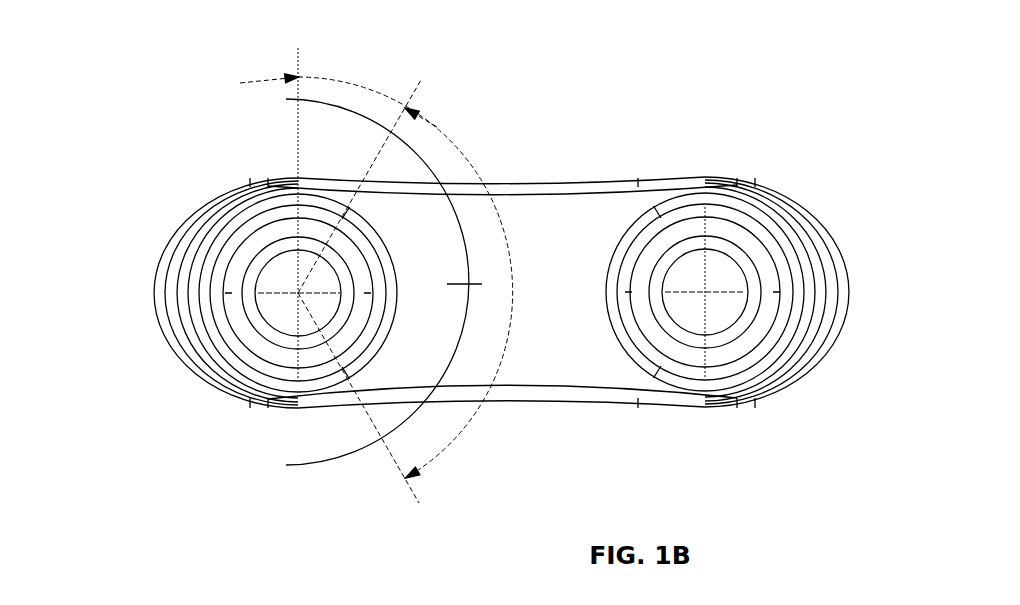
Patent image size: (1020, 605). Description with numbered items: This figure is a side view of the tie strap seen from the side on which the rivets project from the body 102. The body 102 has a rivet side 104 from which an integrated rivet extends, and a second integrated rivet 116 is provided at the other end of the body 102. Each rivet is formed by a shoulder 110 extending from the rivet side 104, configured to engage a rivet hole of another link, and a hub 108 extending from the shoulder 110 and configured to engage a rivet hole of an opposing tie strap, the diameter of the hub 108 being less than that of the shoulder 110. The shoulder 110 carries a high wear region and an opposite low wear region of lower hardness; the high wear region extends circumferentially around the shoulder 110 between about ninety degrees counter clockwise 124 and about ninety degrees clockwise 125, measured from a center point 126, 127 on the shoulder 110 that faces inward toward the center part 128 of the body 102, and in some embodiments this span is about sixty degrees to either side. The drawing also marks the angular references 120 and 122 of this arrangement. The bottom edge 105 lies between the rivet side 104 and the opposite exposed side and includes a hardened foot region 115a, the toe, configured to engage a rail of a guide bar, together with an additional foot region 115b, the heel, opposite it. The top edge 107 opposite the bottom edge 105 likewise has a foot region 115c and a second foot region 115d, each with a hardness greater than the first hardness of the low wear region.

The body 102 is at (587, 180).
The rivet side 104 is at (585, 365).
The bottom edge 105 is at (615, 181).
The top edge 107 is at (513, 398).
The hub 108 is at (253, 293).
The shoulder 110 is at (240, 232).
The foot region 115a is at (283, 177).
The additional foot region 115b is at (679, 177).
The foot region 115c is at (665, 400).
The second foot region 115d is at (278, 405).
The second integrated rivet 116 is at (501, 204).
The 120 degree angle 120 is at (531, 253).
The 30 degree angle 122 is at (352, 56).
The 90 degrees counter clockwise 124 is at (418, 153).
The 90 degrees clockwise 125 is at (445, 375).
The center point 126 is at (593, 285).
The center point 127 is at (410, 280).
The center part 128 is at (520, 290).